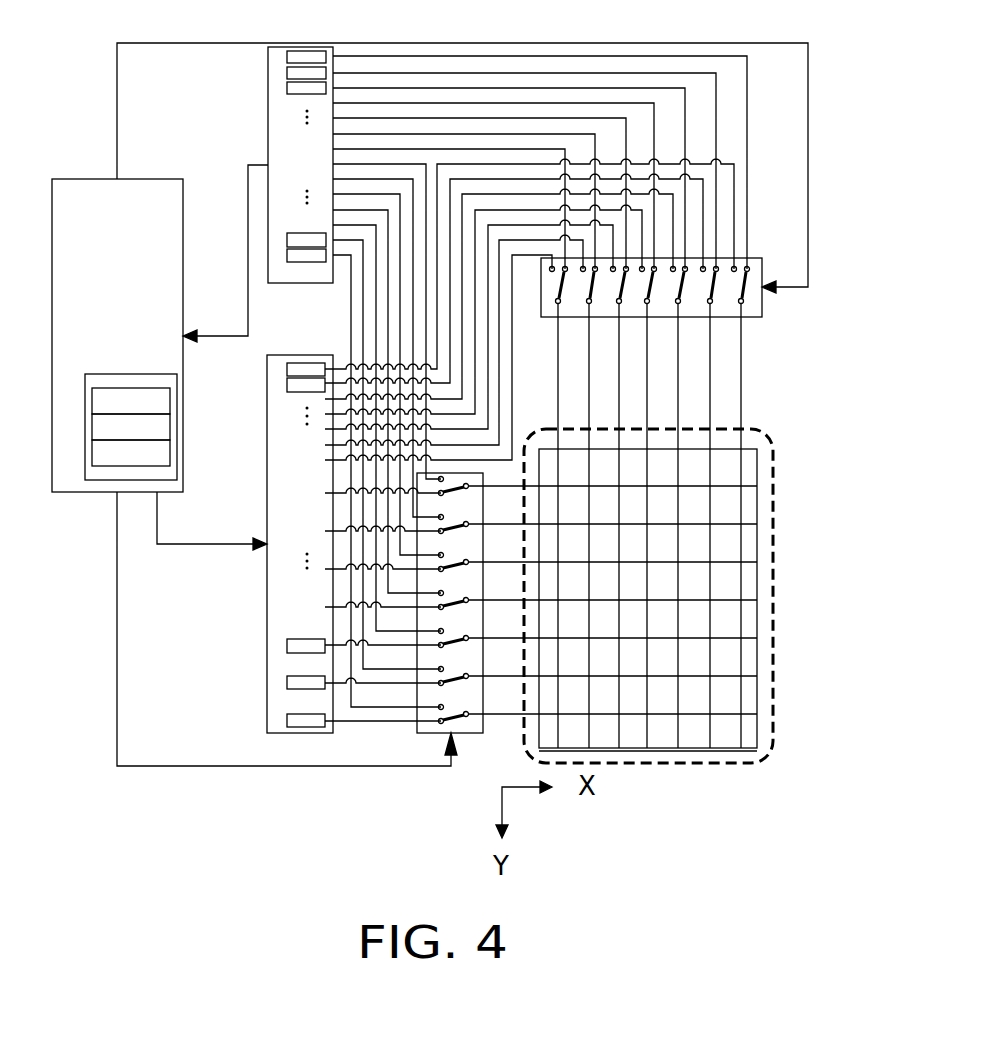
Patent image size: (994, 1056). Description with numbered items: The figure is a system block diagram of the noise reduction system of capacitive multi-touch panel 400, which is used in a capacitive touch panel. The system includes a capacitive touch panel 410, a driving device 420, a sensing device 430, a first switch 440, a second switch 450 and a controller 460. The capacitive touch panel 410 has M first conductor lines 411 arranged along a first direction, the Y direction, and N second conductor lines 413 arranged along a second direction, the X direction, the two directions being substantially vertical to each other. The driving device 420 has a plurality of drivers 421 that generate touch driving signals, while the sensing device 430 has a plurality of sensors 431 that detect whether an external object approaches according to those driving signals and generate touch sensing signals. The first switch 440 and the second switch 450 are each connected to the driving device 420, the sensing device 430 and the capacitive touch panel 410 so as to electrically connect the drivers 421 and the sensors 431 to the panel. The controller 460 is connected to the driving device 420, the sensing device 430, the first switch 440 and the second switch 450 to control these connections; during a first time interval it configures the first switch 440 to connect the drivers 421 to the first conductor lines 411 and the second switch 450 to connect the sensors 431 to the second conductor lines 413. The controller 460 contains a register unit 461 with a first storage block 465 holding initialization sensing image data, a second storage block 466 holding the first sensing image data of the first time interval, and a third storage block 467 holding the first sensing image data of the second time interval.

The noise reduction system of capacitive multi-touch panel 400 is at (142, 26).
The capacitive touch panel 410 is at (653, 764).
The first conductor lines 411 is at (692, 714).
The second conductor lines 413 is at (679, 697).
The driving device 420 is at (267, 607).
The drivers 421 is at (287, 721).
The sensing device 430 is at (288, 57).
The sensors 431 is at (285, 60).
The first switch 440 is at (445, 733).
The second switch 450 is at (755, 318).
The controller 460 is at (144, 178).
The register unit 461 is at (128, 374).
The first storage block 465 is at (171, 400).
The second storage block 466 is at (171, 425).
The third storage block 467 is at (171, 453).